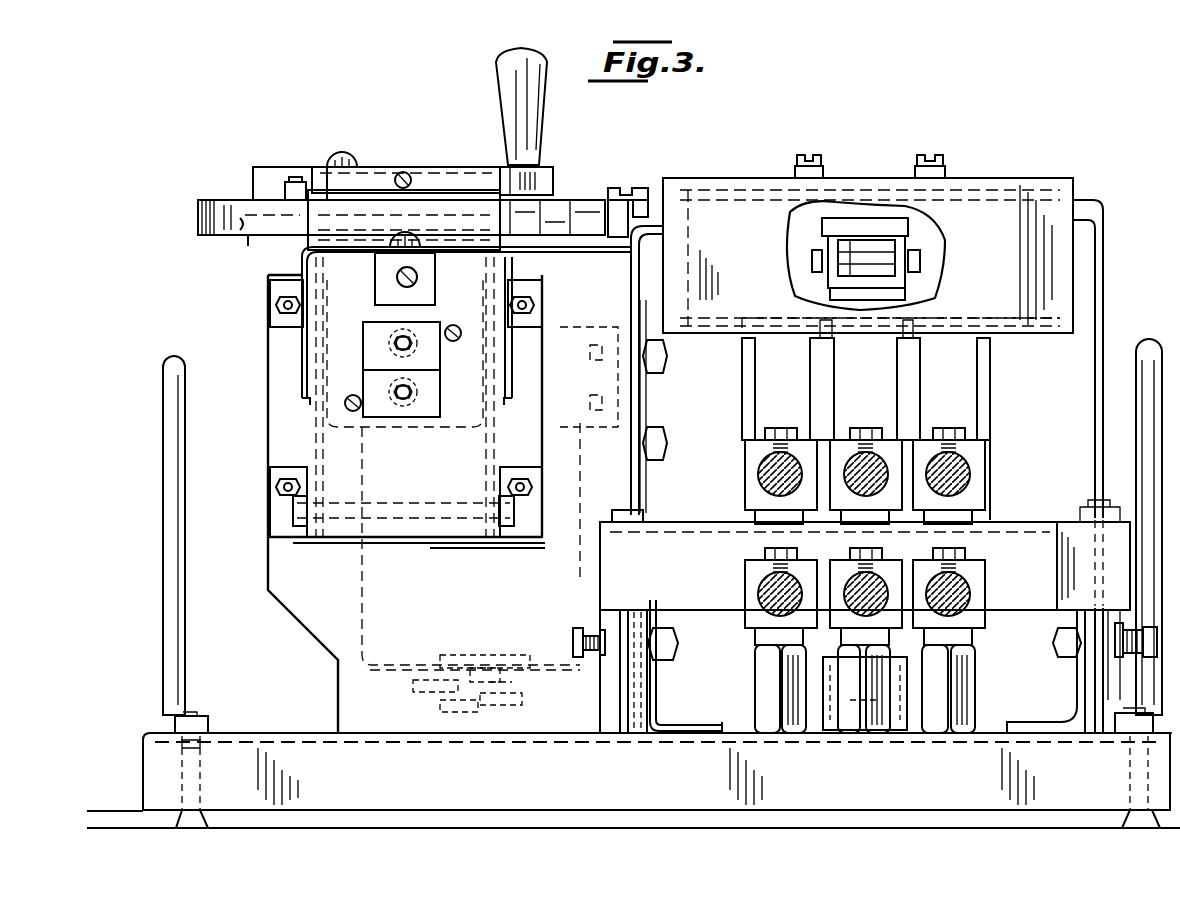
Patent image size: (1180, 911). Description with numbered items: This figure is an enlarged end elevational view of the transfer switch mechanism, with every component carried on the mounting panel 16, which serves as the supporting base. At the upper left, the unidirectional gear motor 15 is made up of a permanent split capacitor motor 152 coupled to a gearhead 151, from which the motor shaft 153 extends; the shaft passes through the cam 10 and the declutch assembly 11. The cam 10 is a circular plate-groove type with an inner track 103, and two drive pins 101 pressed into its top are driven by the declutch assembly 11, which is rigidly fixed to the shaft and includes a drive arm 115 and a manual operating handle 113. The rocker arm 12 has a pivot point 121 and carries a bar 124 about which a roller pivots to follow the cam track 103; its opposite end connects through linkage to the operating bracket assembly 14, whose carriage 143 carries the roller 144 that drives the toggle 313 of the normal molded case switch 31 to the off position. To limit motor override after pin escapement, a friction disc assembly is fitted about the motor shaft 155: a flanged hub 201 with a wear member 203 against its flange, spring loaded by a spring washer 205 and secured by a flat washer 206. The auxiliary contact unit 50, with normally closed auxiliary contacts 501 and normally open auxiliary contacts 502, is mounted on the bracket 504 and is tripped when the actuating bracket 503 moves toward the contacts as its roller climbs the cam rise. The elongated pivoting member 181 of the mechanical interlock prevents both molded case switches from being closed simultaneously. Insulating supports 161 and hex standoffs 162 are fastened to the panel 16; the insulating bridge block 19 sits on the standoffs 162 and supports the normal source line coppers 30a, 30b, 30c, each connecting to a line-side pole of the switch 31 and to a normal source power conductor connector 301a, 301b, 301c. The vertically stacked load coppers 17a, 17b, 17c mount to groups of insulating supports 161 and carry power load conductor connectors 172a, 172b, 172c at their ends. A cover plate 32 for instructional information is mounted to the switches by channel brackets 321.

The cam 10 is at (210, 204).
The declutch assembly 11 is at (486, 178).
The rocker arm 12 is at (549, 250).
The operating bracket assembly 14 is at (1106, 270).
The unidirectional gear motor 15 is at (358, 616).
The mounting panel 16 is at (283, 733).
The load copper 17a is at (768, 629).
The load copper 17b is at (842, 636).
The load copper 17c is at (964, 631).
The insulating bridge block 19 is at (1070, 522).
The normal source line copper 30a is at (762, 517).
The normal source line copper 30b is at (884, 523).
The normal source line copper 30c is at (967, 502).
The normal molded case switch 31 is at (740, 408).
The cover plate 32 is at (996, 178).
The terminal assembly 50 is at (360, 353).
The drive pin 101 is at (296, 177).
The cam track 103 is at (246, 250).
The manual operating handle 113 is at (514, 60).
The drive arm 115 is at (266, 176).
The pivot point 121 is at (625, 186).
The bar 124 is at (610, 218).
The carriage 143 is at (912, 244).
The roller 144 is at (822, 298).
The gearhead 151 is at (518, 426).
The permanent split capacitor motor 152 is at (380, 582).
The motor shaft 153 is at (374, 168).
The motor shaft 155 is at (450, 658).
The insulating support 161 is at (756, 713).
The hex standoff 162 is at (623, 727).
The power load conductor connector 172a is at (748, 584).
The power load conductor connector 172b is at (842, 598).
The power load conductor connector 172c is at (988, 592).
The elongated pivoting member 181 is at (908, 728).
The flanged hub 201 is at (491, 664).
The wear member 203 is at (413, 690).
The spring washer 205 is at (498, 708).
The flat washer 206 is at (440, 712).
The normal source power conductor connector 301a is at (808, 445).
The normal source power conductor connector 301b is at (854, 440).
The normal source power conductor connector 301c is at (938, 440).
The toggle 313 is at (912, 292).
The channel bracket 321 is at (694, 322).
The normally closed auxiliary contacts 501 is at (432, 356).
The normally open auxiliary contacts 502 is at (381, 417).
The actuating bracket 503 is at (460, 195).
The bracket 504 is at (312, 454).